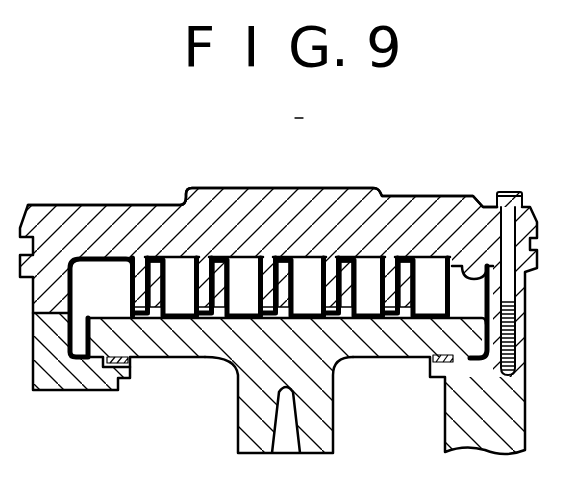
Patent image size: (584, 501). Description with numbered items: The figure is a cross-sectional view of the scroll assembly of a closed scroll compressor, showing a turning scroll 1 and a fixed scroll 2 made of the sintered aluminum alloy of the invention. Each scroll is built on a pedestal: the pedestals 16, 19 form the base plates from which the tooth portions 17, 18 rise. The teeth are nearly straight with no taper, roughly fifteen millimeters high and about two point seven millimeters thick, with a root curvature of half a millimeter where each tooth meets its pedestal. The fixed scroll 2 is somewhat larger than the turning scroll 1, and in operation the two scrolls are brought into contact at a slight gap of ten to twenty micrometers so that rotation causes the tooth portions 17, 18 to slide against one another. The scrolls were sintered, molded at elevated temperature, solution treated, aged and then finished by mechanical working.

The turning scroll 1 is at (382, 360).
The fixed scroll 2 is at (431, 194).
The pedestal 16 is at (145, 213).
The tooth portion 17 is at (132, 284).
The tooth portion 18 is at (178, 287).
The pedestal 19 is at (193, 352).